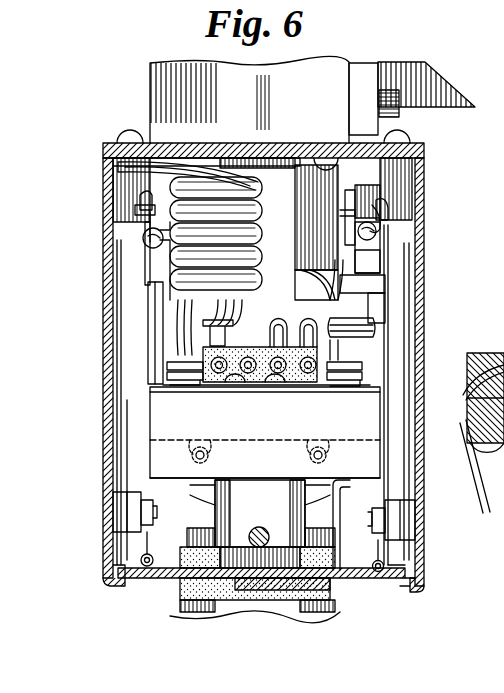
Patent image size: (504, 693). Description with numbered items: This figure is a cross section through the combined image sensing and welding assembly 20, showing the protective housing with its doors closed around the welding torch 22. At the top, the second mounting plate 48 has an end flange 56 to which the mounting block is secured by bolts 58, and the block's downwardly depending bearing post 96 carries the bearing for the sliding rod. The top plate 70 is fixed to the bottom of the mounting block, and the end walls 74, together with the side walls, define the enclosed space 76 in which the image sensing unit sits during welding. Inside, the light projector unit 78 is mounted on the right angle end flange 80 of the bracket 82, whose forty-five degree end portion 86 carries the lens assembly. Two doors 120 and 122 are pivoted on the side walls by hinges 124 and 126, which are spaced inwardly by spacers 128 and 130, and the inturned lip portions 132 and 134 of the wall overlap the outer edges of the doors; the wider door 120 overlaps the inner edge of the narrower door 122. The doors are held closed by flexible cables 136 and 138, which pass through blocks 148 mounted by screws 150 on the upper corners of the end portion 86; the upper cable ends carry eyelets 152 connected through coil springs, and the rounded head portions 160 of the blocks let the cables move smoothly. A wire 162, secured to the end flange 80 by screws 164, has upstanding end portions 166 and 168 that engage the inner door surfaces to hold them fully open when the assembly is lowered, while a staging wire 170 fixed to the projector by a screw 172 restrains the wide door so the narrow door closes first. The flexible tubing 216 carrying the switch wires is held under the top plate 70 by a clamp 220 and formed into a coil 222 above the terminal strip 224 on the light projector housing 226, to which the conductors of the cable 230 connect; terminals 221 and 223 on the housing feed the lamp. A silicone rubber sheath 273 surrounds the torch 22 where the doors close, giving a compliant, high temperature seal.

The combined image sensing and welding assembly 20 is at (100, 51).
The welding torch 22 is at (195, 612).
The second mounting plate 48 is at (420, 62).
The end flange 56 is at (368, 66).
The bolts 58 is at (400, 112).
The top plate 70 is at (170, 143).
The end walls 74 is at (415, 478).
The enclosed space 76 is at (137, 440).
The light projector unit 78 is at (395, 432).
The right angle end flange 80 is at (148, 455).
The bracket 82 is at (158, 380).
The 45 degree end portion 86 is at (366, 282).
The bearing post 96 is at (270, 178).
The door 120 is at (350, 580).
The door 122 is at (165, 580).
The hinge 124 is at (385, 570).
The hinge 126 is at (142, 560).
The spacer 128 is at (405, 515).
The spacer 130 is at (120, 500).
The inturned lip portion 132 is at (405, 588).
The inturned lip portion 134 is at (118, 584).
The flexible cable 136 is at (150, 213).
The flexible cable 138 is at (382, 224).
The block 148 is at (145, 270).
The screw 150 is at (148, 252).
The eyelet 152 is at (345, 192).
The rounded head portion 160 is at (145, 196).
The wire 162 is at (265, 465).
The screws 164 is at (205, 446).
The upstanding end portion 166 is at (390, 343).
The upstanding end portion 168 is at (140, 338).
The staging wire 170 is at (318, 590).
The screw 172 is at (372, 500).
The flexible tubing 216 is at (130, 172).
The clamp 220 is at (113, 180).
The terminal 221 is at (195, 375).
The coil 222 is at (170, 287).
The terminal 223 is at (338, 385).
The terminal strip 224 is at (262, 380).
The light projector housing 226 is at (158, 410).
The cable 230 is at (372, 330).
The silicone rubber sheath 273 is at (250, 600).